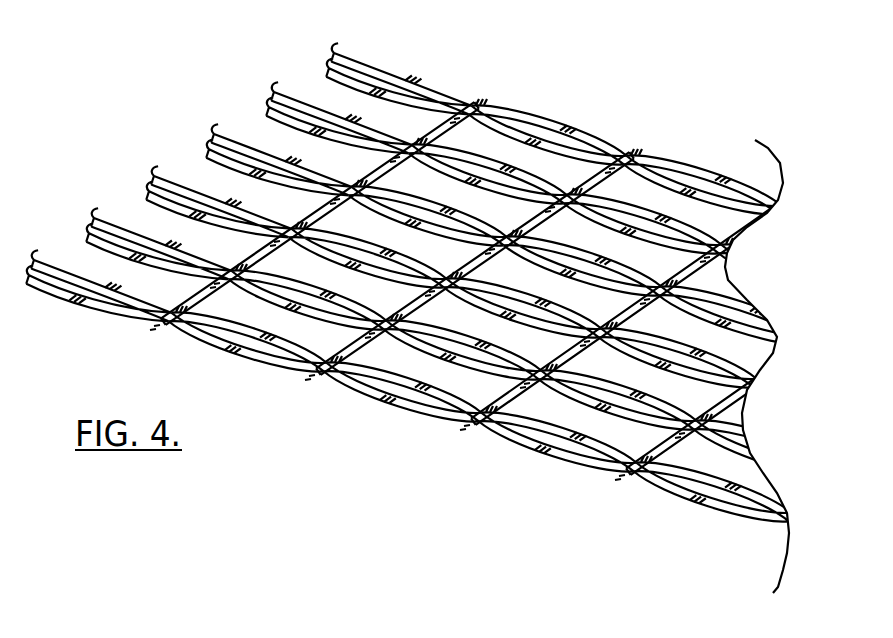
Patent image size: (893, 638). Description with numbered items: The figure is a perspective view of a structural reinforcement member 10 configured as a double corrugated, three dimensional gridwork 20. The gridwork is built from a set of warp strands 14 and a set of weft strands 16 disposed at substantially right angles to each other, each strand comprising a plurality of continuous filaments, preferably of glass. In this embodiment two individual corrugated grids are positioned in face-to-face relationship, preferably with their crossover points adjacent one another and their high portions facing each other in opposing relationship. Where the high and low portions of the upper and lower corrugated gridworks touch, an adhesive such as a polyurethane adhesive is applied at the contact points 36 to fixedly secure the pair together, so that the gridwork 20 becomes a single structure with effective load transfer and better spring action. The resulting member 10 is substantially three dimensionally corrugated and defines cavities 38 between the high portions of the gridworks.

The structural reinforcement member 10 is at (731, 135).
The warp strands 14 is at (306, 103).
The weft strands 16 is at (334, 341).
The double corrugated, three dimensional gridwork 20 is at (623, 472).
The contact points 36 is at (471, 107).
The cavities 38 is at (547, 133).